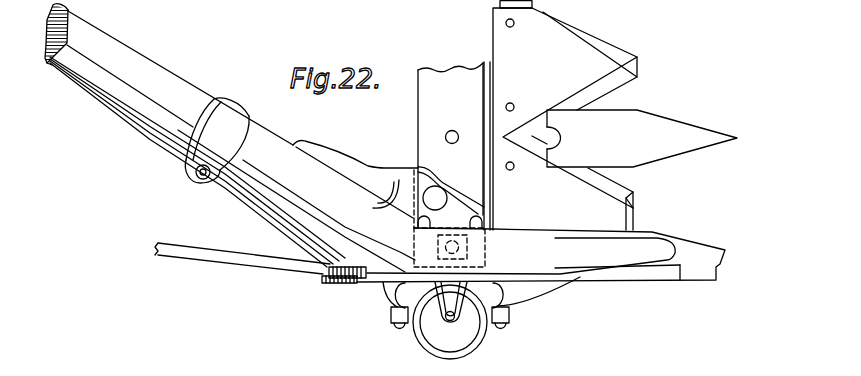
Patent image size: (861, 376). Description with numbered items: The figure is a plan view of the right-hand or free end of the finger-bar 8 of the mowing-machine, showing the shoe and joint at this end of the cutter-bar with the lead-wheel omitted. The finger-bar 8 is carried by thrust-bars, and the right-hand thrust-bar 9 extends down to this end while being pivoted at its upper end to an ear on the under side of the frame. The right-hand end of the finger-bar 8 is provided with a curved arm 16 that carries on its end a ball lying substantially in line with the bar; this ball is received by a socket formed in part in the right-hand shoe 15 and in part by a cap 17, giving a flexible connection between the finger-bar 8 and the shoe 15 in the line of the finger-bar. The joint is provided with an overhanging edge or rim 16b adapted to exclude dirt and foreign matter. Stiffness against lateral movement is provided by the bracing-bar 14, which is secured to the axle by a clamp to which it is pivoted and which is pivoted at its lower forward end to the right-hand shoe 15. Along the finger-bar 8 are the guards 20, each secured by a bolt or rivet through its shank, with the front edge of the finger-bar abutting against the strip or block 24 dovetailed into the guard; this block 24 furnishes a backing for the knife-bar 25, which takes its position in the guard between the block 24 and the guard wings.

The thrust-bar 9 is at (133, 108).
The right-hand shoe 15 is at (234, 164).
The finger-bar 8 is at (428, 145).
The strip or block 24 is at (489, 89).
The knife-bar 25 is at (500, 4).
The guard 20 is at (642, 138).
The bracing-bar 14 is at (285, 268).
The curved arm 16 is at (437, 321).
The overhanging edge or rim 16b is at (465, 348).
The cap 17 is at (508, 325).